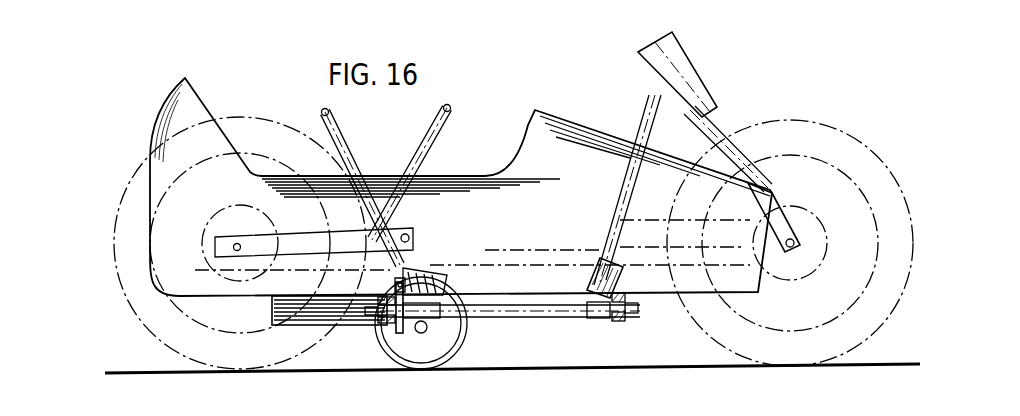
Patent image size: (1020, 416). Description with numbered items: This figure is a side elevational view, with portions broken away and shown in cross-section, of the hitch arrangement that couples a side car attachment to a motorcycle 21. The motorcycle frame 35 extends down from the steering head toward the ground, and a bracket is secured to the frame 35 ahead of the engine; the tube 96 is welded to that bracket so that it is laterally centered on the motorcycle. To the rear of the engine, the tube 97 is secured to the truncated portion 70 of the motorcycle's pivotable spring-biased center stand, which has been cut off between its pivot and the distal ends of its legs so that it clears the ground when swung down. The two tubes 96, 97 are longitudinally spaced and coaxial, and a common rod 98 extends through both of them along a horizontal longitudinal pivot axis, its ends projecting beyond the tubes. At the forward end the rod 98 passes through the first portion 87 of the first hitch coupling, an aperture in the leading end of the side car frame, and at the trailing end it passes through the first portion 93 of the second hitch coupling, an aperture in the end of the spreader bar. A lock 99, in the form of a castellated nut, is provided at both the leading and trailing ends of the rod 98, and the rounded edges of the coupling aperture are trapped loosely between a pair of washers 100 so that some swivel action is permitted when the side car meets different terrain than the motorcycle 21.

The motorcycle 21 is at (700, 73).
The motorcycle frame 35 is at (625, 200).
The washers 100 is at (605, 282).
The rod 98 is at (535, 315).
The first portion of second hitch coupling 93 is at (380, 312).
The truncated portion of center stand 70 is at (398, 322).
The tube 97 is at (413, 316).
The tube 96 is at (600, 318).
The first portion of first hitch coupling 87 is at (618, 323).
The lock 99 is at (637, 313).